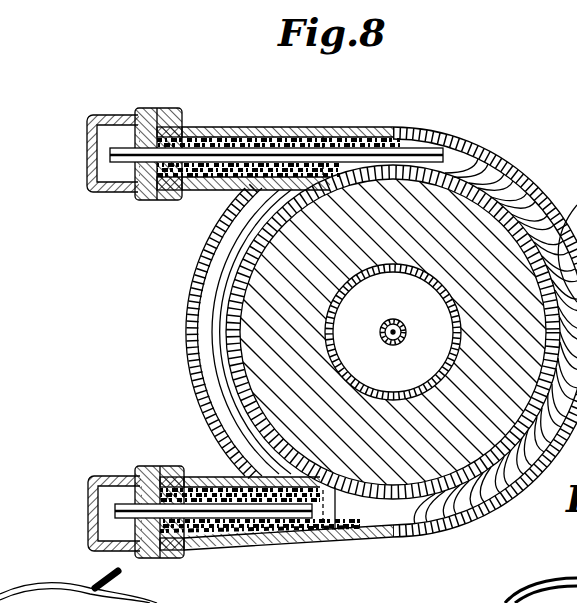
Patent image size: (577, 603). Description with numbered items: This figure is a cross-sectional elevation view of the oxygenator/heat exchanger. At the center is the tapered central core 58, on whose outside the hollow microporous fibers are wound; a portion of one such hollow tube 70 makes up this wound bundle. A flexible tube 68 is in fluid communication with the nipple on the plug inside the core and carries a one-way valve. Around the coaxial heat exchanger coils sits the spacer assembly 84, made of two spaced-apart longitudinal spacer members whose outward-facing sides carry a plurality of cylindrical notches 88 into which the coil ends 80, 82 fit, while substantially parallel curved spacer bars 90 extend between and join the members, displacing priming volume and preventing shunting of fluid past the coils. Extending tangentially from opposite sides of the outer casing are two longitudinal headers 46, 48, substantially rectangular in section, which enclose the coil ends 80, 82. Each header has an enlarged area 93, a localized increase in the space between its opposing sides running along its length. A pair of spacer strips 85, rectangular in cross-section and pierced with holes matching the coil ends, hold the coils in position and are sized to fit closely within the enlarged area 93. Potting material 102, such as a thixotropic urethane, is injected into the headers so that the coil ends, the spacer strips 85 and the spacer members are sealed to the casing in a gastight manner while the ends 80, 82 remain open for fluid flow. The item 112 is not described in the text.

The header 46 is at (88, 130).
The header 48 is at (90, 518).
The central core 58 is at (410, 385).
The flexible tube 68 is at (391, 319).
The hollow tube 70 is at (263, 337).
The coil end 80 is at (110, 153).
The coil end 82 is at (115, 503).
The spacer assembly 84 is at (210, 386).
The spacer strip 85 is at (168, 110).
The cylindrical notch 88 is at (353, 123).
The spacer bar 90 is at (217, 356).
The enlarged area 93 is at (148, 108).
The potting material 102 is at (238, 127).
The tab 112 is at (100, 572).